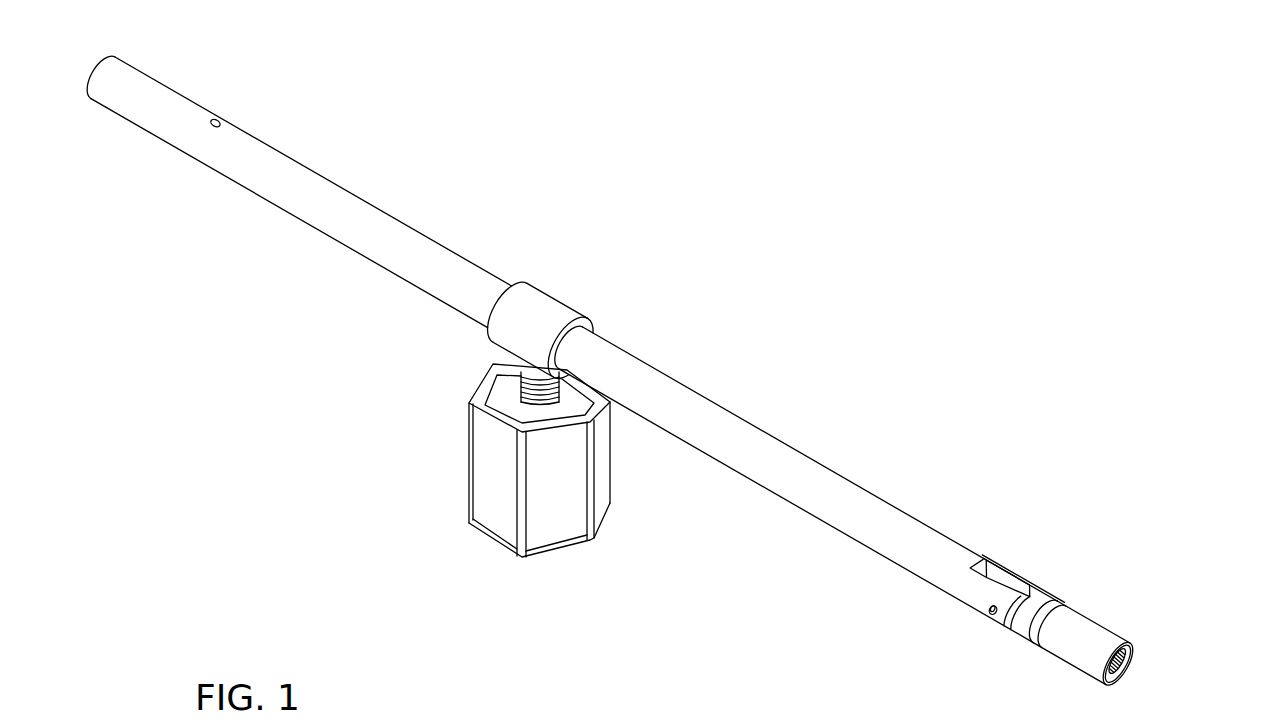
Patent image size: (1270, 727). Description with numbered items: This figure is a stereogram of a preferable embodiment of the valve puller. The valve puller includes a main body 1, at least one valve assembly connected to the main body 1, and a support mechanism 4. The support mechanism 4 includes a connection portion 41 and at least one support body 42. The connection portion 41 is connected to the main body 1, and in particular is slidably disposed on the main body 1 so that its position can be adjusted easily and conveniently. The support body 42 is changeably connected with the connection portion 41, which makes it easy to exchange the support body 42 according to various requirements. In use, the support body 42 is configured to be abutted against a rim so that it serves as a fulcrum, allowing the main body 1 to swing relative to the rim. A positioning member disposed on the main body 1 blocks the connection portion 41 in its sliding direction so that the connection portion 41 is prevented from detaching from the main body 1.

The main body 1 is at (674, 369).
The support mechanism 4 is at (505, 365).
The connection portion 41 is at (497, 315).
The support body 42 is at (443, 457).